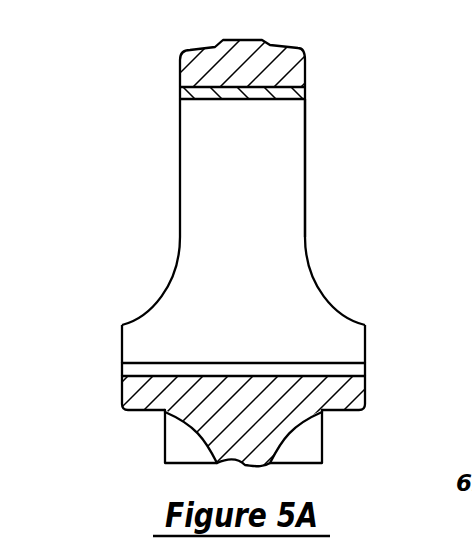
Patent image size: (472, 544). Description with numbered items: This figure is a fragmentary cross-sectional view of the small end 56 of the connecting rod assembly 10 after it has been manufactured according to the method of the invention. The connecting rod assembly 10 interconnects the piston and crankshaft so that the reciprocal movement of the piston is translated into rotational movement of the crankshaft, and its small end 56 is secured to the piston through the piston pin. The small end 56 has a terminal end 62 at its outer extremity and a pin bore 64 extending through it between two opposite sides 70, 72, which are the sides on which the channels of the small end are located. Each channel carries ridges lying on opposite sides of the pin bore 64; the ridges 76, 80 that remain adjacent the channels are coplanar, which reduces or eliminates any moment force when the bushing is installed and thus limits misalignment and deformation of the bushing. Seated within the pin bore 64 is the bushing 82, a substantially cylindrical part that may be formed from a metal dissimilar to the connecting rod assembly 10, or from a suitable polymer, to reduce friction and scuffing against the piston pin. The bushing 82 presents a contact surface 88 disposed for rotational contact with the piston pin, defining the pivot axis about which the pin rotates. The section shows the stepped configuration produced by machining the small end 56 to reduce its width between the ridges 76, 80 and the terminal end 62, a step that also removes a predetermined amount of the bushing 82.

The connecting rod assembly 10 is at (133, 207).
The small end 56 is at (157, 127).
The terminal end 62 is at (203, 46).
The pin bore 64 is at (316, 233).
The side of the small end 70 is at (122, 399).
The side of the small end 72 is at (365, 390).
The ridge 76 is at (122, 327).
The ridge 80 is at (364, 327).
The bushing 82 is at (313, 105).
The contact surface 88 is at (285, 148).